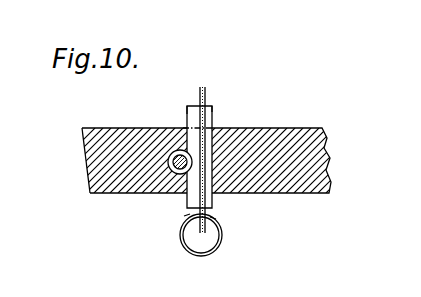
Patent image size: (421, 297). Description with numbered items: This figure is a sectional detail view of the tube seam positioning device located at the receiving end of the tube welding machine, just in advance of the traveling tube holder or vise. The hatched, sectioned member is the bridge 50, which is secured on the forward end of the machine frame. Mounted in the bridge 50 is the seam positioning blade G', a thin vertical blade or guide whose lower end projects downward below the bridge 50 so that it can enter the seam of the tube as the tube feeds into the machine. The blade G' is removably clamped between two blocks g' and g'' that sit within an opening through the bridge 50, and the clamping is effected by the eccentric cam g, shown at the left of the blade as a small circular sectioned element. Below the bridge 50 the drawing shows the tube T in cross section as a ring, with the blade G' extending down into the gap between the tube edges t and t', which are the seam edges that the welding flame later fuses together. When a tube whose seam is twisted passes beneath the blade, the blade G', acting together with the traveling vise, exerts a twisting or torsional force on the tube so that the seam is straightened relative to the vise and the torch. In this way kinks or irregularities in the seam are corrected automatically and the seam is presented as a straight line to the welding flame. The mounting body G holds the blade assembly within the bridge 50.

The bridge 50 is at (315, 130).
The guide body G is at (215, 152).
The seam positioning blade G' is at (216, 150).
The block g'' is at (246, 89).
The block g' is at (175, 95).
The eccentric cam g is at (166, 135).
The ring T is at (203, 257).
The ring left portion t' is at (165, 224).
The edge of the tube t is at (222, 216).